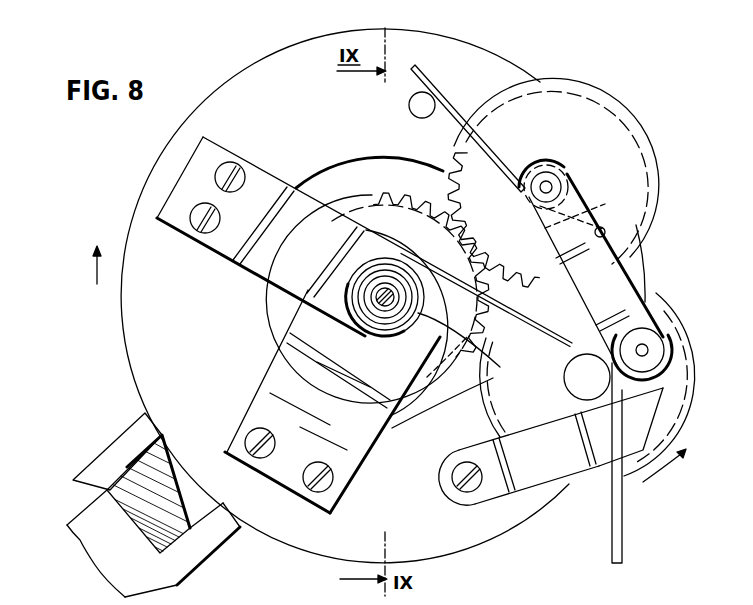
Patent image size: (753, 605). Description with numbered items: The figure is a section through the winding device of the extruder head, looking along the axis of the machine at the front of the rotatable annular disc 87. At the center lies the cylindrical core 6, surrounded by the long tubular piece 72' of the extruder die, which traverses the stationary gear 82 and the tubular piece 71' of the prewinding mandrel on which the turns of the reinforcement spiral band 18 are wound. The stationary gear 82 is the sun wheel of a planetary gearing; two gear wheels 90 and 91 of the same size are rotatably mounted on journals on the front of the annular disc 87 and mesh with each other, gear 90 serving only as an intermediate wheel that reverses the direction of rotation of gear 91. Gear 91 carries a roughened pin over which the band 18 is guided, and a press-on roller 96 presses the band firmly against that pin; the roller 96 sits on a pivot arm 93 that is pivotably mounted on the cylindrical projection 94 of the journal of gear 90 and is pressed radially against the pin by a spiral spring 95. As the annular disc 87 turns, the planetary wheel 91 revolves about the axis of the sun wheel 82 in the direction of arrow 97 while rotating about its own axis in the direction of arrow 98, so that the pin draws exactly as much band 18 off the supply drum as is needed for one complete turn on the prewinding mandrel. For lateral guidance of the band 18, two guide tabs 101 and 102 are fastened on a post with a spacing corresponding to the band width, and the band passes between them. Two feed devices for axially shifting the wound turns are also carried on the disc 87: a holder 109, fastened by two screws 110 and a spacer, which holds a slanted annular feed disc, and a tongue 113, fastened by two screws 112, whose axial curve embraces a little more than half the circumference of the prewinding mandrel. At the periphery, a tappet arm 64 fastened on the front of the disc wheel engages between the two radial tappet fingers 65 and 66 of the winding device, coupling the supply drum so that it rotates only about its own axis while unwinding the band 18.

The cylindrical core 6 is at (390, 280).
The reinforcement spiral band 18 is at (625, 536).
The tappet arm 64 is at (92, 472).
The tappet finger 65 is at (212, 527).
The tappet finger 66 is at (115, 455).
The tubular piece of the prewinding mandrel 71' is at (460, 397).
The tubular piece of the extruder die 72' is at (449, 323).
The stationary gear 82 is at (359, 196).
The annular disc 87 is at (237, 88).
The gear wheel 90 is at (623, 152).
The gear wheel 91 is at (670, 396).
The pivot arm 93 is at (553, 236).
The cylindrical projection 94 is at (548, 184).
The spiral spring 95 is at (601, 227).
The press-on roller 96 is at (656, 330).
The arrow 97 is at (91, 269).
The arrow 98 is at (664, 479).
The guide tab 101 is at (551, 446).
The guide tab 102 is at (540, 467).
The holder 109 is at (297, 362).
The screws 110 is at (264, 458).
The screws 112 is at (215, 178).
The tongue 113 is at (263, 184).